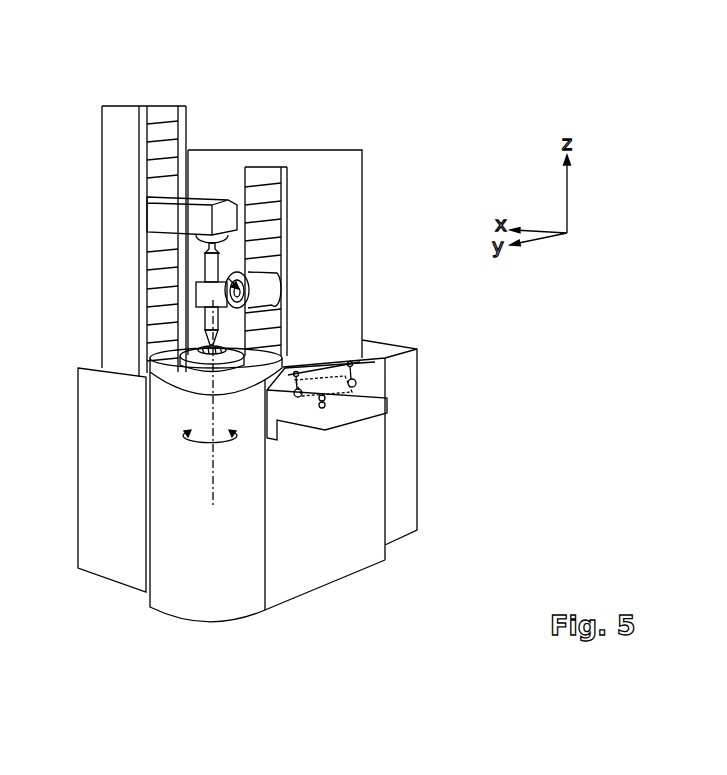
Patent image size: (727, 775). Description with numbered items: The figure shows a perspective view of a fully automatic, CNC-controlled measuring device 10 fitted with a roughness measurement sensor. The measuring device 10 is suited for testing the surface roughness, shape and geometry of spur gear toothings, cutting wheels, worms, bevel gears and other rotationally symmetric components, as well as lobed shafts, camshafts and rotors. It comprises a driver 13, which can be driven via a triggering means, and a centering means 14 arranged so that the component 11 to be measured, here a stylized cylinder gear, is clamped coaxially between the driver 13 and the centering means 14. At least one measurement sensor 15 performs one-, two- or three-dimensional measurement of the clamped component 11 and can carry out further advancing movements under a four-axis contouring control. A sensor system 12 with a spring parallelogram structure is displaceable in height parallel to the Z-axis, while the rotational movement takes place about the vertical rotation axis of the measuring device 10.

The measuring device 10 is at (430, 95).
The component 11 is at (197, 299).
The sensor system 12 is at (260, 314).
The driver 13 is at (195, 357).
The centering means 14 is at (200, 241).
The measurement sensor 15 is at (280, 273).